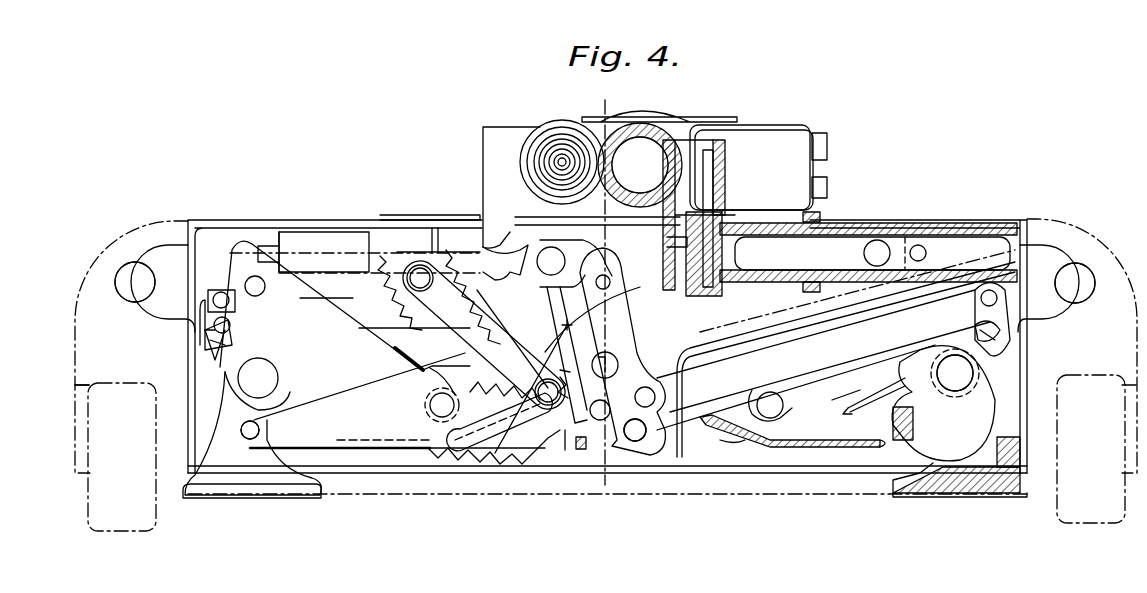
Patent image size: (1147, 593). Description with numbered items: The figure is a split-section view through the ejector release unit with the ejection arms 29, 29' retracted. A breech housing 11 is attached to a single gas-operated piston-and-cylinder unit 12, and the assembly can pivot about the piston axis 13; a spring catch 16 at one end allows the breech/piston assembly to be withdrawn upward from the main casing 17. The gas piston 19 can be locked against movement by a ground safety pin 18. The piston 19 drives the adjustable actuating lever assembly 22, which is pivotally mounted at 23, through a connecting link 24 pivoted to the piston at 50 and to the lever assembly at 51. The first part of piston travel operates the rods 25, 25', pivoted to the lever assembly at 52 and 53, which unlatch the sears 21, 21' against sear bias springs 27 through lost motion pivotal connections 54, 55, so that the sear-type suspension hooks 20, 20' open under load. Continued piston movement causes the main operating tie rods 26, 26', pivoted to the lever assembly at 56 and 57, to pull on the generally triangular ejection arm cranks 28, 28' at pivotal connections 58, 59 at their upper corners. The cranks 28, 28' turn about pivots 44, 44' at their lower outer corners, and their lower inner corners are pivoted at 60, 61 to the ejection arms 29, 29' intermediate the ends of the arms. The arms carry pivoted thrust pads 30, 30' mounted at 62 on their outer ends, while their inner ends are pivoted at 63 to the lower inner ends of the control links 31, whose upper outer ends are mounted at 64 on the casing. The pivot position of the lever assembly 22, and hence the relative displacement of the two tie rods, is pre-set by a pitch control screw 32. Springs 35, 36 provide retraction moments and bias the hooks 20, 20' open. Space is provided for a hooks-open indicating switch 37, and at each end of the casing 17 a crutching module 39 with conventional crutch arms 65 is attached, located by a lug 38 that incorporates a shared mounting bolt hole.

The breech housing 11 is at (505, 148).
The piston-and-cylinder unit 12 is at (828, 234).
The piston axis 13 is at (510, 244).
The spring catch 16 is at (408, 218).
The main casing 17 is at (320, 232).
The ground safety pin 18 is at (920, 247).
The gas piston 19 is at (697, 290).
The suspension hook 20 is at (218, 397).
The suspension hook 20' is at (1044, 449).
The sear 21 is at (551, 297).
The sear 21' is at (1069, 331).
The actuating lever assembly 22 is at (617, 343).
The pivot 23 is at (614, 400).
The connecting link 24 is at (670, 130).
The rod 25 is at (480, 335).
The rod 25' is at (823, 355).
The main operating tie rod 26 is at (385, 252).
The main operating tie rod 26' is at (698, 496).
The sear bias spring 27 is at (218, 342).
The ejection arm crank 28 is at (181, 341).
The ejection arm crank 28' is at (831, 460).
The ejection arm 29 is at (393, 445).
The ejection arm 29' is at (796, 441).
The thrust pad 30 is at (252, 517).
The thrust pad 30' is at (946, 486).
The control link 31 is at (495, 420).
The pitch control screw 32 is at (583, 447).
The spring 35 is at (420, 385).
The spring 36 is at (930, 360).
The hooks-open indicating switch 37 is at (287, 235).
The lug 38 is at (140, 252).
The crutching module 39 is at (78, 384).
The pivot 44 is at (273, 372).
The pivot 44' is at (987, 400).
The pivotal connection 50 is at (880, 245).
The pivotal connection 51 is at (548, 254).
The pivotal connection 52 is at (606, 288).
The pivotal connection 53 is at (663, 447).
The lost motion pivotal connection 54 is at (223, 302).
The lost motion pivotal connection 55 is at (988, 289).
The pivotal connection 56 is at (620, 300).
The pivotal connection 57 is at (647, 437).
The pivotal connection 58 is at (254, 284).
The pivotal connection 59 is at (874, 383).
The pivotal connection 60 is at (436, 420).
The pivotal connection 61 is at (773, 412).
The pivotal mounting 62 is at (250, 440).
The pivotal connection 63 is at (560, 350).
The pivotal mounting 64 is at (405, 268).
The crutch arm 65 is at (108, 500).